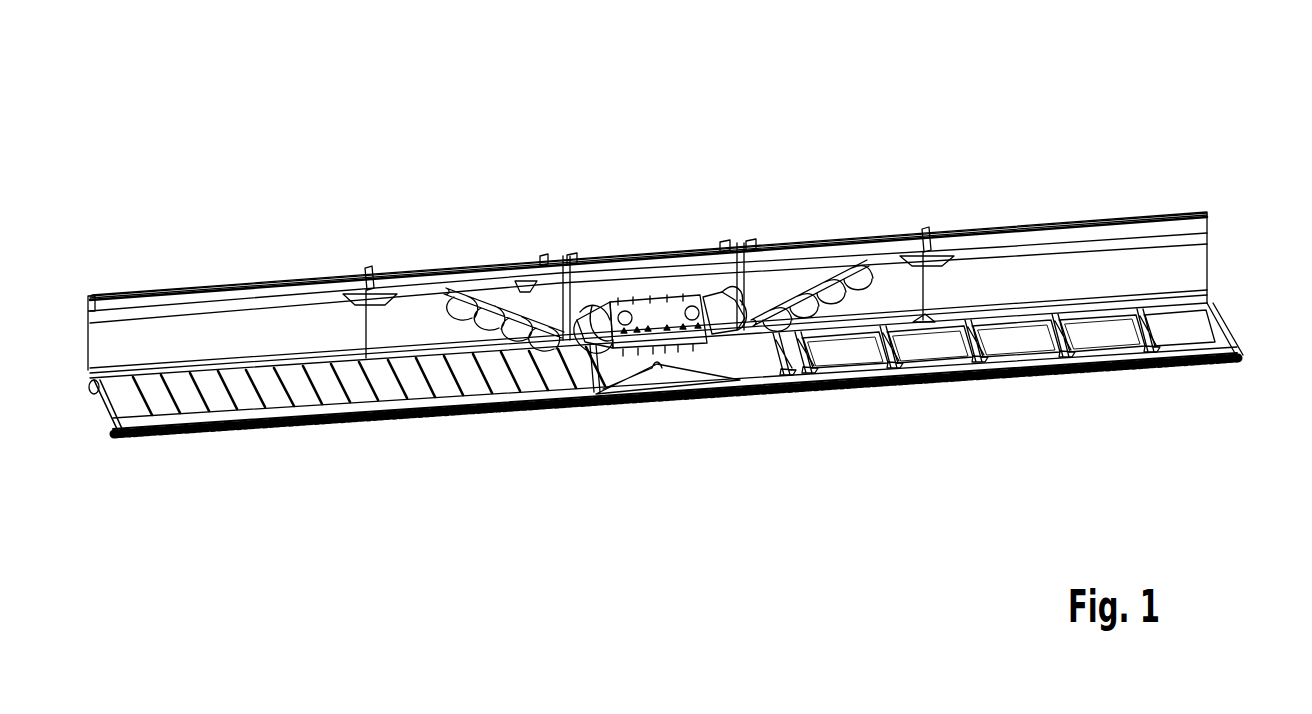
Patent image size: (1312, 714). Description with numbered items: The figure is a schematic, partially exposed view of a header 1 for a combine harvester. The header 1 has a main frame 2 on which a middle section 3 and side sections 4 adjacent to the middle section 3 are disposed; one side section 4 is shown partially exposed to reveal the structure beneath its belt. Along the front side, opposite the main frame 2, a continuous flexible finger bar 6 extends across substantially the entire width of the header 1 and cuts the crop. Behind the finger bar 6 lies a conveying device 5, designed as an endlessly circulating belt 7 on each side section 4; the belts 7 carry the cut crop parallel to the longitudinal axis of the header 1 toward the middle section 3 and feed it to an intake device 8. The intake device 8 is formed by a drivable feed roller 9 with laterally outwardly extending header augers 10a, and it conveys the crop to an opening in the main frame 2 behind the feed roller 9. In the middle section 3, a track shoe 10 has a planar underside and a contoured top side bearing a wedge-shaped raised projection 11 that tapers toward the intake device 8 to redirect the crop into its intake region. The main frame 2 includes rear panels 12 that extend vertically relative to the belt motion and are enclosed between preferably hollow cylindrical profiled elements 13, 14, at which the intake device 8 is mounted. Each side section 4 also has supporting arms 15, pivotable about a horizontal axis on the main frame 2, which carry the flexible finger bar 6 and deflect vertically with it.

The header 1 is at (951, 114).
The main frame 2 is at (1221, 235).
The middle section 3 is at (657, 241).
The side section 4 is at (398, 246).
The conveying device 5 is at (338, 400).
The finger bar 6 is at (236, 441).
The endlessly circulating belt 7 is at (1200, 322).
The intake device 8 is at (606, 382).
The feed roller 9 is at (705, 350).
The track shoe 10 is at (735, 368).
The header auger 10a is at (455, 290).
The projection 11 is at (665, 385).
The rear panel 12 is at (110, 345).
The profiled element 13 is at (96, 395).
The profiled element 14 is at (118, 290).
The supporting arm 15 is at (890, 385).